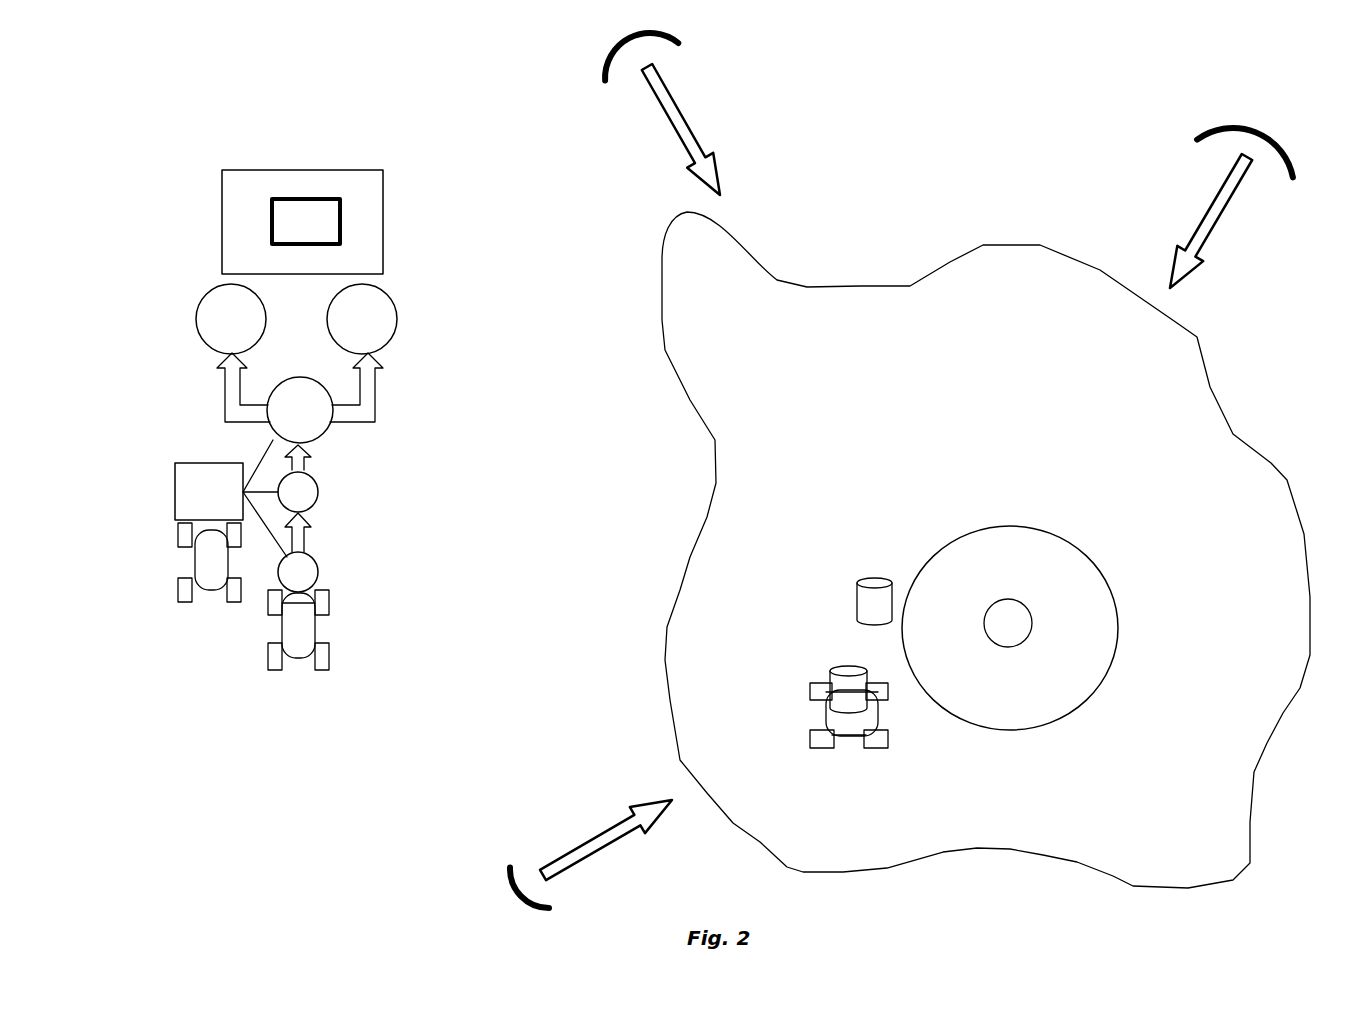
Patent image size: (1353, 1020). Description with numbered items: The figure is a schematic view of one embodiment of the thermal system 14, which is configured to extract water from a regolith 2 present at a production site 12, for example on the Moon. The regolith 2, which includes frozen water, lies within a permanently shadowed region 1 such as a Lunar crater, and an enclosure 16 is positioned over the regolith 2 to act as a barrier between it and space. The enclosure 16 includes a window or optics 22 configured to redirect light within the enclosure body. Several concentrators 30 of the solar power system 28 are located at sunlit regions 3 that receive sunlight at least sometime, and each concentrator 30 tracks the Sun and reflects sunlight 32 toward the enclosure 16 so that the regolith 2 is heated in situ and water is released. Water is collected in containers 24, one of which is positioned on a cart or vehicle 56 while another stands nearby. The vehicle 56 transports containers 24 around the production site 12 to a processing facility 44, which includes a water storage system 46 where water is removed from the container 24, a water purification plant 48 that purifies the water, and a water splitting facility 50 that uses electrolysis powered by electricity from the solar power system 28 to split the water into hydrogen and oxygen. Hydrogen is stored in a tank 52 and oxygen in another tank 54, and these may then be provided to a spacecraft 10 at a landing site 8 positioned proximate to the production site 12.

The permanently shadowed region 1 is at (1184, 665).
The regolith 2 is at (787, 302).
The sunlit region 3 is at (839, 545).
The landing site 8 is at (300, 185).
The spacecraft 10 is at (340, 218).
The production site 12 is at (966, 114).
The thermal system 14 is at (847, 189).
The enclosure 16 is at (1010, 628).
The window or optics 22 is at (1008, 623).
The container 24 is at (861, 645).
The solar power system 28 is at (208, 490).
The concentrator 30 is at (605, 77).
The sunlight 32 is at (670, 129).
The processing facility 44 is at (443, 339).
The water storage system 46 is at (308, 572).
The water purification plant 48 is at (312, 496).
The water splitting facility 50 is at (300, 415).
The hydrogen tank 52 is at (207, 296).
The oxygen tank 54 is at (378, 294).
The vehicle 56 is at (210, 570).